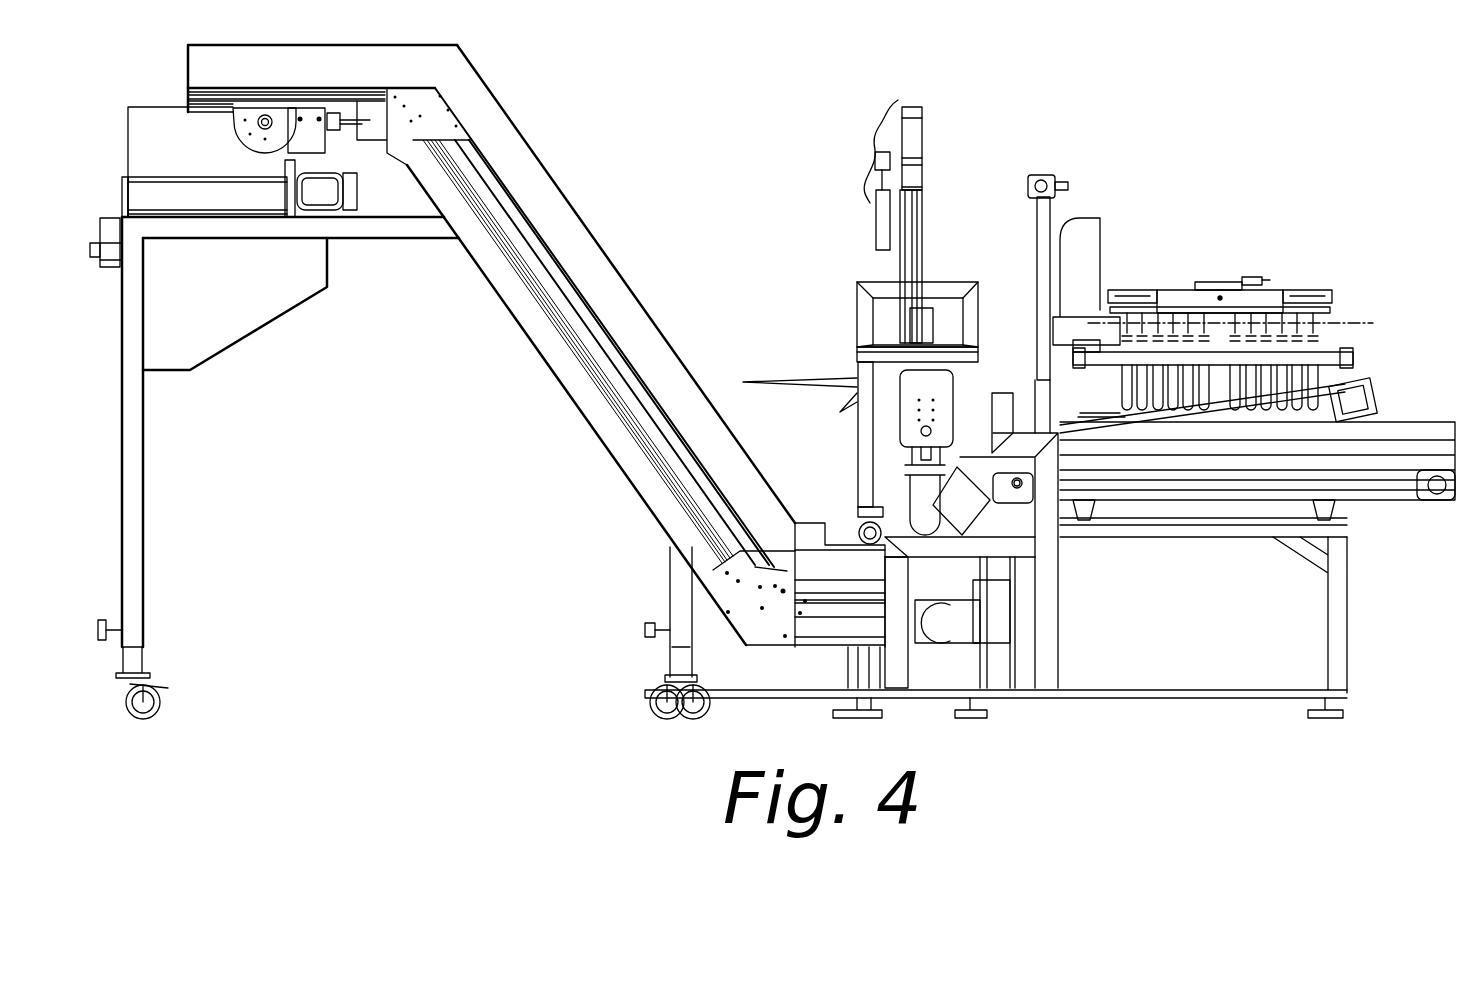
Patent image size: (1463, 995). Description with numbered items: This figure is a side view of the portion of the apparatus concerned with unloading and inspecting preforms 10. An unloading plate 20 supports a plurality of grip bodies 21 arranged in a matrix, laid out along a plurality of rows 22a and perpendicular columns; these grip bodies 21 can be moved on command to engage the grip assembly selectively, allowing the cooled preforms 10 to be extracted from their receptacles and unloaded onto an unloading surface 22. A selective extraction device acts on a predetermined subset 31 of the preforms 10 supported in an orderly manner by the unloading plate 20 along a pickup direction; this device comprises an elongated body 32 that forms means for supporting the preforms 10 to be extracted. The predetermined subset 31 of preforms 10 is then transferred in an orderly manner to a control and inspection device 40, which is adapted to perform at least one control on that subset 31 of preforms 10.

The preforms 10 is at (1250, 373).
The unloading plate 20 is at (1178, 284).
The grip bodies 21 is at (1125, 363).
The unloading surface 22 is at (1387, 448).
The rows 22a is at (1217, 277).
The predetermined subset 31 is at (1218, 400).
The elongated body 32 is at (1217, 323).
The control and inspection device 40 is at (848, 270).